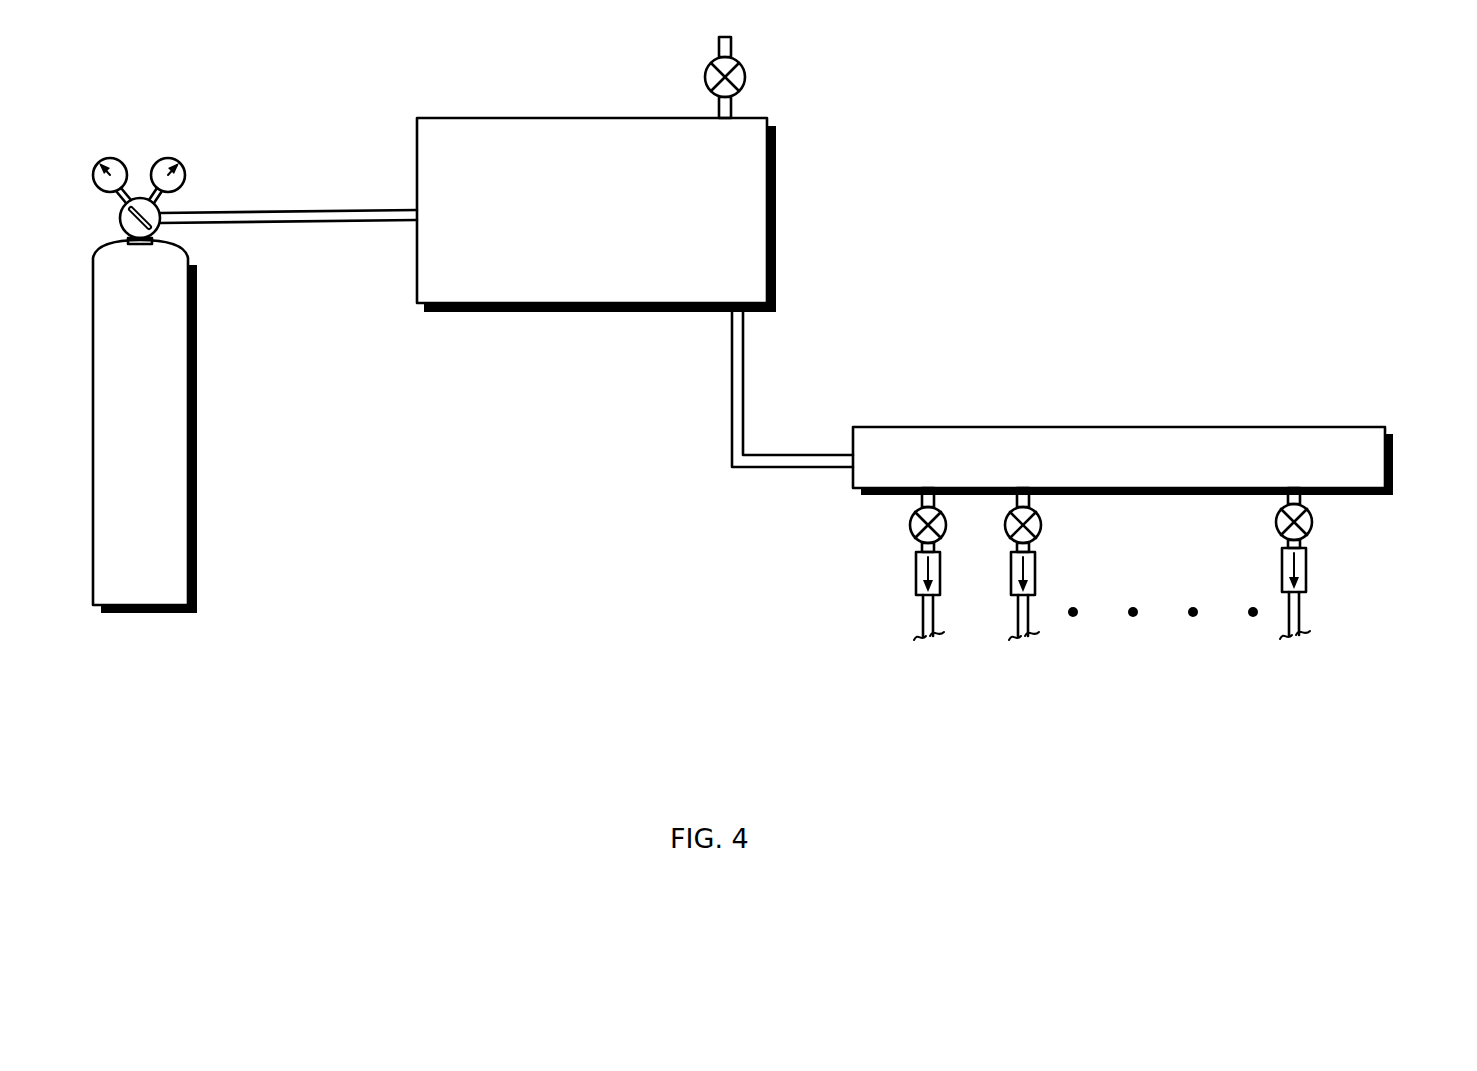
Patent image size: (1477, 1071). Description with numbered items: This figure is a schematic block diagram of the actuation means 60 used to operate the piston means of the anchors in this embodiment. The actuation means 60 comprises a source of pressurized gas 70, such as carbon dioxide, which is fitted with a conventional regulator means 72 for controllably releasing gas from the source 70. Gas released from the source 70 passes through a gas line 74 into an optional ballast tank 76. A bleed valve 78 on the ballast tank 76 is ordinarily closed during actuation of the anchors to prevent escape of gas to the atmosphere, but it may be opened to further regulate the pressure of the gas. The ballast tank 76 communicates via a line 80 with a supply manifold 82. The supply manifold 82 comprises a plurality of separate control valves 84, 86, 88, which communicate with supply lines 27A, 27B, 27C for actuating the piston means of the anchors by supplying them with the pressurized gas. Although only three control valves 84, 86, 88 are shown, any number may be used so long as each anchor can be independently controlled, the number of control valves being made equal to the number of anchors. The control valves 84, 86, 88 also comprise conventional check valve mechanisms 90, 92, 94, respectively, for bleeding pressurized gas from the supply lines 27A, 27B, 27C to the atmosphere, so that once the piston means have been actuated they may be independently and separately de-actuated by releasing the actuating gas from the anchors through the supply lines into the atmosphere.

The actuation means 60 is at (1018, 204).
The source of pressurized gas 70 is at (197, 431).
The regulator means 72 is at (158, 206).
The gas line 74 is at (304, 210).
The ballast tank 76 is at (497, 118).
The bleed valve 78 is at (705, 77).
The line 80 is at (743, 386).
The supply manifold 82 is at (1317, 427).
The control valve 84 is at (910, 530).
The control valve 86 is at (1041, 533).
The control valve 88 is at (1312, 528).
The check valve mechanism 90 is at (917, 580).
The check valve mechanism 92 is at (1012, 573).
The check valve mechanism 94 is at (1306, 572).
The supply line 27A is at (920, 611).
The supply line 27B is at (1013, 610).
The supply line 27C is at (1300, 610).